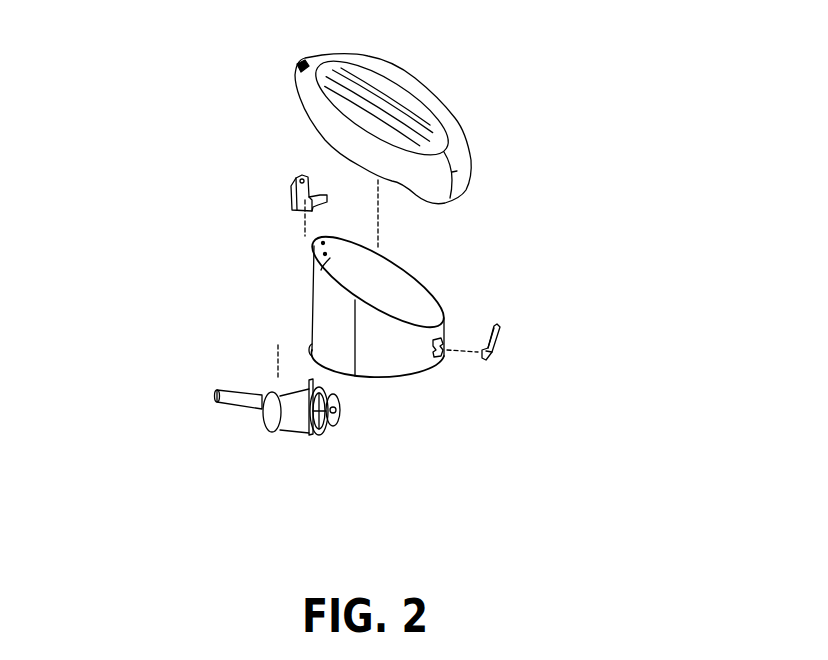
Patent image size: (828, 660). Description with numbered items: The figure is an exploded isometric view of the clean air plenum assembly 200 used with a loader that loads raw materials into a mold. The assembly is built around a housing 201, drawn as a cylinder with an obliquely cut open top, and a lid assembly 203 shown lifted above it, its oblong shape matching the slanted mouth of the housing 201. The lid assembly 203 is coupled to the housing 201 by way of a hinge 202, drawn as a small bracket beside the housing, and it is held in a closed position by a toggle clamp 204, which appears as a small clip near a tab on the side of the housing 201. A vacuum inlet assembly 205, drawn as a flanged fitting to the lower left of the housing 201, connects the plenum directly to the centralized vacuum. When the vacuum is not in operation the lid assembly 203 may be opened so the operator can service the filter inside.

The light fixture assembly 200 is at (353, 305).
The housing 201 is at (428, 372).
The hinge 202 is at (287, 190).
The lid assembly 203 is at (460, 130).
The toggle clamp 204 is at (503, 357).
The vacuum inlet assembly 205 is at (213, 400).